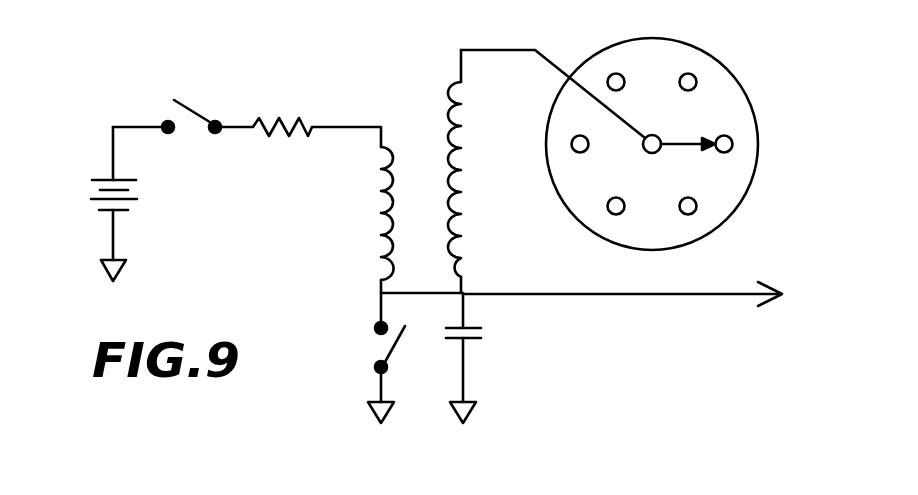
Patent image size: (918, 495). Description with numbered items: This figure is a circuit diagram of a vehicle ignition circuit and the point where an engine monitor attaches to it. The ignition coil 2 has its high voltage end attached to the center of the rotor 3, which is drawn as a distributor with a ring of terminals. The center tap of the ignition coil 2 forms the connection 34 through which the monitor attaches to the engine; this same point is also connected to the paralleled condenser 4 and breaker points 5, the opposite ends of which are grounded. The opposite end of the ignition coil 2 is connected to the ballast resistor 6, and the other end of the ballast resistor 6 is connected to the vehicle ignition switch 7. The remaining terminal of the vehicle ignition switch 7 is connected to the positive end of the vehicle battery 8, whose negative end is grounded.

The ignition coil 2 is at (462, 204).
The rotor 3 is at (717, 61).
The condenser 4 is at (486, 333).
The breaker points 5 is at (382, 346).
The ballast resistor 6 is at (289, 118).
The vehicle ignition switch 7 is at (188, 104).
The vehicle battery 8 is at (138, 196).
The connection 34 is at (749, 293).